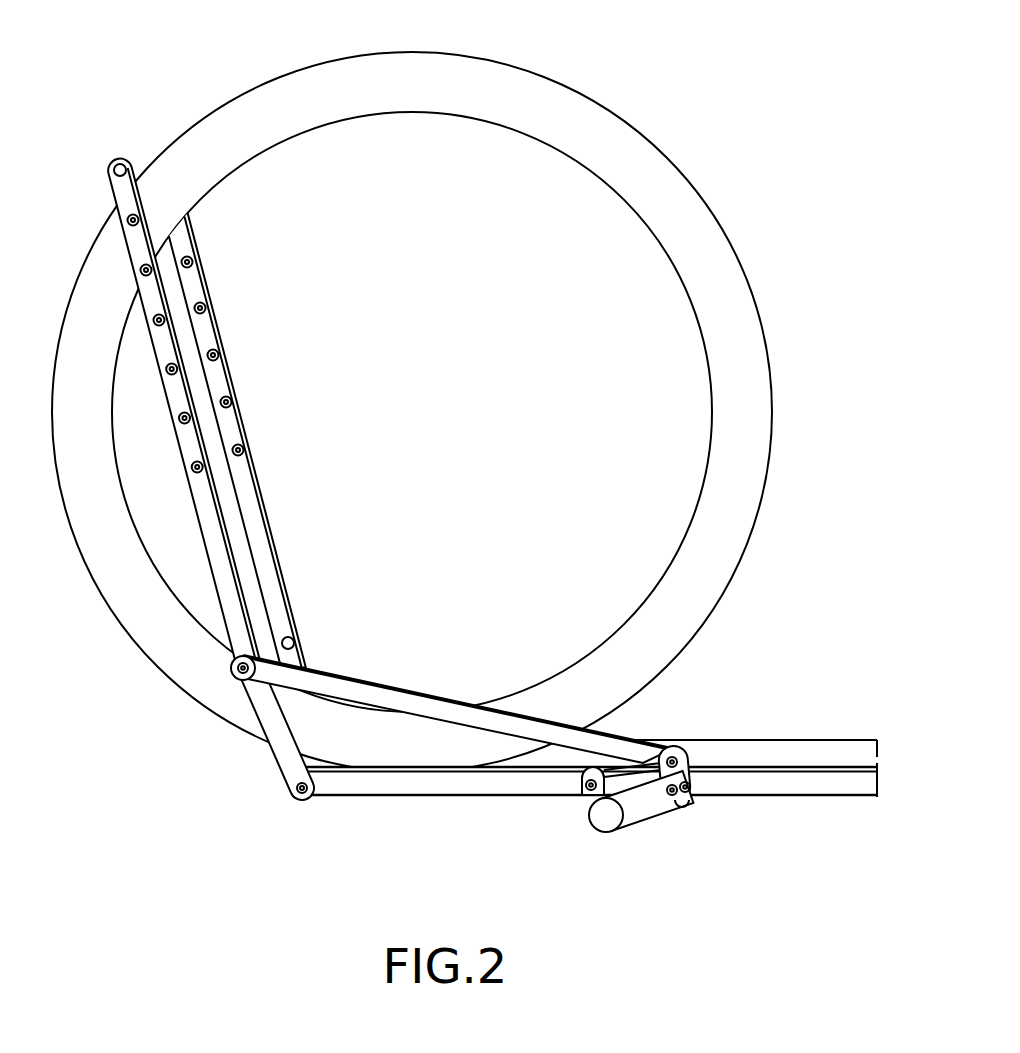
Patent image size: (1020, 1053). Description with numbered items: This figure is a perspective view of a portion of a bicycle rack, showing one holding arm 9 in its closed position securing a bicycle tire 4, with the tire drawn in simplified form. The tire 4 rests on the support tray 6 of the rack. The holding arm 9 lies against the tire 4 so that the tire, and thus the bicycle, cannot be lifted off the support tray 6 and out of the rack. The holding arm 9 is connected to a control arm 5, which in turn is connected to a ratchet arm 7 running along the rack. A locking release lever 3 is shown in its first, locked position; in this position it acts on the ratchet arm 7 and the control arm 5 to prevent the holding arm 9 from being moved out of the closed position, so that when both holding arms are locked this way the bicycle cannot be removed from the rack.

The locking release lever 3 is at (642, 810).
The bicycle tire 4 is at (573, 115).
The control arm 5 is at (422, 703).
The support tray 6 is at (372, 783).
The ratchet arm 7 is at (777, 783).
The holding arm 9 is at (140, 247).